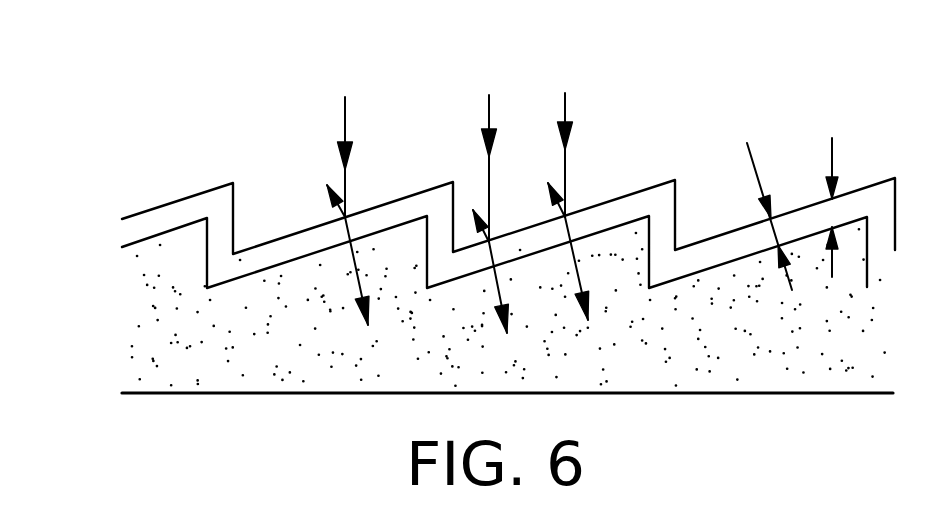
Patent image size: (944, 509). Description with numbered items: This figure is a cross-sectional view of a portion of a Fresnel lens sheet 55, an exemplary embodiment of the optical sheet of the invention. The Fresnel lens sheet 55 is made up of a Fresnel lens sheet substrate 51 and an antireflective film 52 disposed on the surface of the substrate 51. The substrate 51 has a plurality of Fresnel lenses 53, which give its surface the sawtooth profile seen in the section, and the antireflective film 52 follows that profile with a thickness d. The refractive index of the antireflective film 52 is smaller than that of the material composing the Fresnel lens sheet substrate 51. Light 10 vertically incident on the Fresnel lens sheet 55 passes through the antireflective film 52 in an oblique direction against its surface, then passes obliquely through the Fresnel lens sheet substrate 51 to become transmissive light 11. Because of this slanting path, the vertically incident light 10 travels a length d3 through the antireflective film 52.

The Fresnel lens sheet 55 is at (130, 98).
The Fresnel lens sheet substrate 51 is at (137, 313).
The antireflective film 52 is at (153, 222).
The Fresnel lenses 53 is at (294, 258).
The light 10 is at (577, 85).
The transmissive light 11 is at (610, 330).
The thickness of the antireflective film d is at (758, 216).
The length traveled through the antireflective film d3 is at (830, 189).